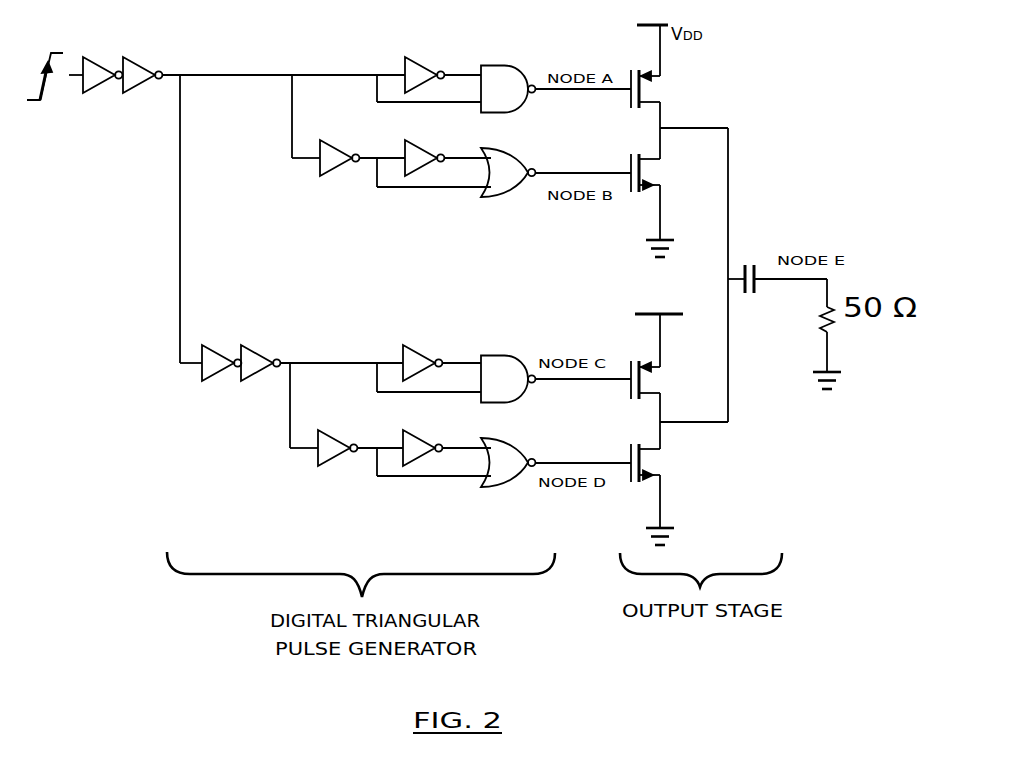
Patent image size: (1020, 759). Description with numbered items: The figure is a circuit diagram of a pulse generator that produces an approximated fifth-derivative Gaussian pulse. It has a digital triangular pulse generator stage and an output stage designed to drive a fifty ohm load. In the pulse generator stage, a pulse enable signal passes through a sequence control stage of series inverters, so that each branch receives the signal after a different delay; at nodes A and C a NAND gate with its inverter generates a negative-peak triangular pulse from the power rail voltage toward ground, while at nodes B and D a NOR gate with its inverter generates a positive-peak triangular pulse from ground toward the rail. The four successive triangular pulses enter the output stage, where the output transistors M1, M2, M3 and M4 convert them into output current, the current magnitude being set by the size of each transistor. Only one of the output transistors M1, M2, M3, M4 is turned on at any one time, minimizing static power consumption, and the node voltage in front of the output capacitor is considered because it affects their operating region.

The output transistor M1 is at (668, 89).
The output transistor M2 is at (669, 173).
The output transistor M3 is at (670, 380).
The output transistor M4 is at (670, 463).